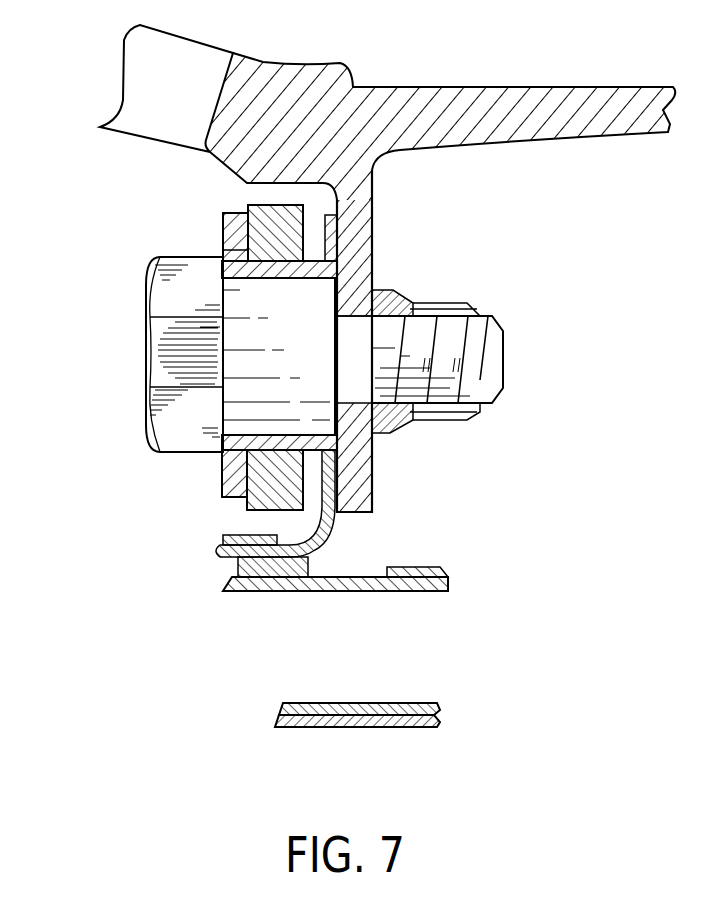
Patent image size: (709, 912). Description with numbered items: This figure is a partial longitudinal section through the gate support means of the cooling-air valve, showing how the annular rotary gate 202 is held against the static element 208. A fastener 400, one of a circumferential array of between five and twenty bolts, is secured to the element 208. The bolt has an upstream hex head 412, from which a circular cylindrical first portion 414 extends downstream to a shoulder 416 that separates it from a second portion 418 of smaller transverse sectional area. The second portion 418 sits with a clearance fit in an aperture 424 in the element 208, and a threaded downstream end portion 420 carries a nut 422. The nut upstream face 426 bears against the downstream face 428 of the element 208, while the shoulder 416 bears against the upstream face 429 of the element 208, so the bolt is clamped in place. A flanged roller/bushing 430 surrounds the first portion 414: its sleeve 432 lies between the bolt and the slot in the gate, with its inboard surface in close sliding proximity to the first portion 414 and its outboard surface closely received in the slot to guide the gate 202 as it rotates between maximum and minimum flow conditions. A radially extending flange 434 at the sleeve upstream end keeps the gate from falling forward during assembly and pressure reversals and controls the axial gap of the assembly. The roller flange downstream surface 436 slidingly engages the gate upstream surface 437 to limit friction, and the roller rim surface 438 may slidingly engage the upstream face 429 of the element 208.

The annular rotary gate 202 is at (262, 212).
The static element 208 is at (365, 228).
The fastener 400 is at (329, 392).
The upstream head 412 is at (168, 368).
The first portion 414 is at (243, 338).
The shoulder 416 is at (372, 262).
The second portion 418 is at (393, 425).
The threaded downstream end portion 420 is at (492, 354).
The nut 422 is at (482, 410).
The aperture 424 is at (345, 444).
The nut upstream face 426 is at (375, 289).
The downstream face 428 is at (373, 193).
The upstream face 429 is at (340, 466).
The flanged roller/bushing 430 is at (217, 470).
The sleeve 432 is at (278, 440).
The radially extending flange 434 is at (230, 495).
The roller flange downstream surface 436 is at (237, 250).
The gate upstream surface 437 is at (235, 227).
The roller rim surface 438 is at (372, 508).